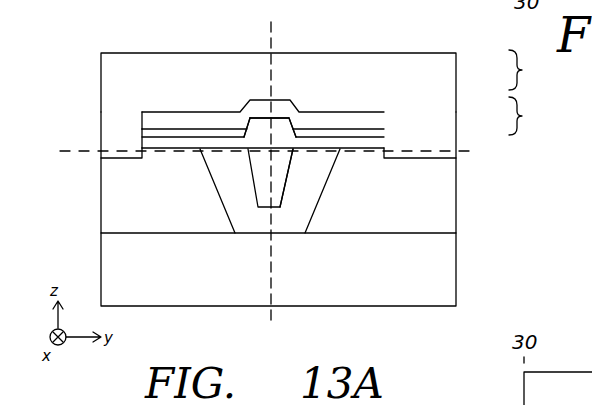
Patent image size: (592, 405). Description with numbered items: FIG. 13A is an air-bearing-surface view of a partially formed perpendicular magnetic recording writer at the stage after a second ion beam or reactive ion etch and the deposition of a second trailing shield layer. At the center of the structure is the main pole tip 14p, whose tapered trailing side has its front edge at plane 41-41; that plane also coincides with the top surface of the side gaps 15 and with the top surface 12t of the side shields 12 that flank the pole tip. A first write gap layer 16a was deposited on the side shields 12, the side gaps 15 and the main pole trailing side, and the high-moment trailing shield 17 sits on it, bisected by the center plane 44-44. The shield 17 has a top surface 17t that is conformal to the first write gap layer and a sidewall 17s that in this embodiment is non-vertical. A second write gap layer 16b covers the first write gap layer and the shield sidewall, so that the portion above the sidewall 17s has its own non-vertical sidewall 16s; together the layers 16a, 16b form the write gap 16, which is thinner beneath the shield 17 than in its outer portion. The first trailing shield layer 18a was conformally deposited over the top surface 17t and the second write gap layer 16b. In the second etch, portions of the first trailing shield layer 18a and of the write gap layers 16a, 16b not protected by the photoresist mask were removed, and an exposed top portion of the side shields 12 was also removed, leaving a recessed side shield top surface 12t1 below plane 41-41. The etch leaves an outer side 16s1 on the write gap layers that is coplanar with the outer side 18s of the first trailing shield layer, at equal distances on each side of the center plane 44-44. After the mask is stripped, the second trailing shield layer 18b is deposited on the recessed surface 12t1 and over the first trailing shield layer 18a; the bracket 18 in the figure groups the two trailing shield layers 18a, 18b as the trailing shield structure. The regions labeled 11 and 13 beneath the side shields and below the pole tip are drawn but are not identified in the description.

The substrate 11 is at (112, 257).
The side shields 12 is at (112, 208).
The top surface of side shields 12t is at (372, 149).
The side shield top surface 12t1 is at (112, 158).
The channel region 13 is at (262, 230).
The main pole tip 14p is at (279, 202).
The side gaps 15 is at (228, 174).
The write gap 16 is at (395, 117).
The first write gap layer 16a is at (385, 144).
The second write gap layer 16b is at (385, 134).
The sidewall of second write gap layer 16s is at (247, 120).
The outer side of write gap layers 16s1 is at (142, 136).
The high moment trailing shield 17 is at (257, 123).
The top surface of high moment trailing shield 17t is at (297, 110).
The sidewall of high moment trailing shield 17s is at (298, 128).
The interlayer insulating film 18 is at (528, 70).
The first trailing shield layer 18a is at (385, 120).
The second trailing shield layer 18b is at (440, 60).
The outer side of first trailing shield layer 18s is at (142, 120).
The plane 41- 41 is at (270, 151).
The center plane 44- 44 is at (271, 173).